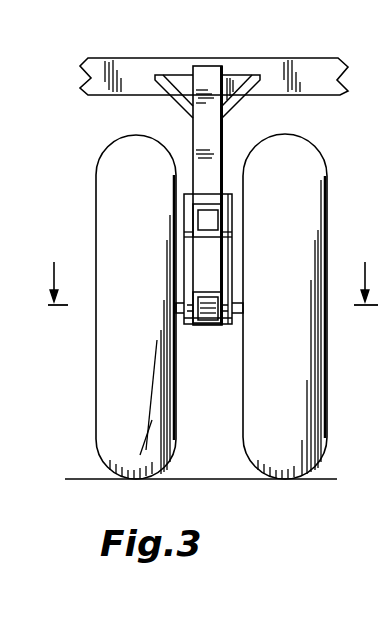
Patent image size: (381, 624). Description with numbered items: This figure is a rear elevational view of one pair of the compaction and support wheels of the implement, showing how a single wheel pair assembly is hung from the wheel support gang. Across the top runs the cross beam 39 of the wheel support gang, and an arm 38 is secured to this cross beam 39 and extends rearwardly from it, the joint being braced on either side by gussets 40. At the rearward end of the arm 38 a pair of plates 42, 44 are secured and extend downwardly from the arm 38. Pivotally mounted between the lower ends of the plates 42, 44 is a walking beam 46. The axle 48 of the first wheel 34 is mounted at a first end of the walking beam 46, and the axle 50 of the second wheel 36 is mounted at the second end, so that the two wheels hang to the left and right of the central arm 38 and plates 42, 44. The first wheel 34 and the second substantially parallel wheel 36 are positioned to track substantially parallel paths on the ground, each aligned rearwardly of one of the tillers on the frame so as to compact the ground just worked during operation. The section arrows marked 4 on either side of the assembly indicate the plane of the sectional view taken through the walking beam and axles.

The first wheel 34 is at (315, 441).
The second wheel 36 is at (172, 452).
The arm 38 is at (224, 130).
The cross beam 39 is at (318, 83).
The gussets 40 is at (173, 80).
The plate 42 is at (190, 234).
The plate 44 is at (229, 256).
The walking beam 46 is at (205, 325).
The axle 48 is at (234, 310).
The axle 50 is at (180, 308).
The section line 4- 4 is at (213, 272).